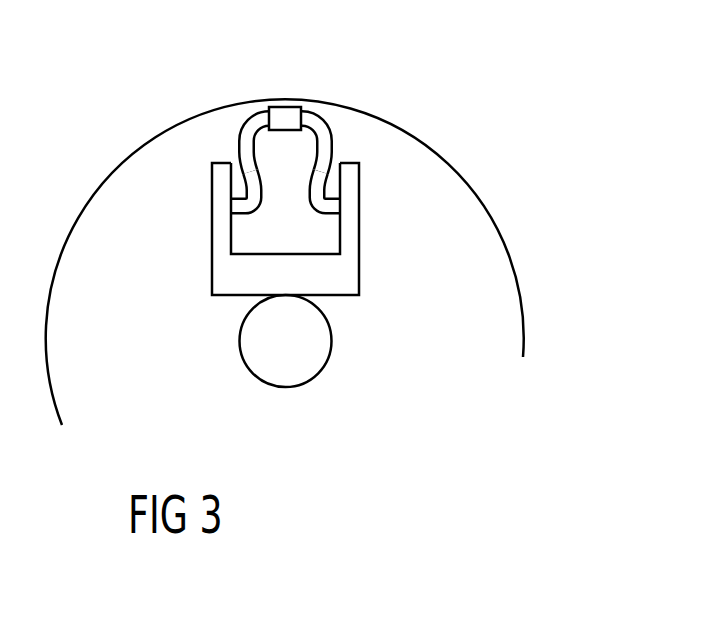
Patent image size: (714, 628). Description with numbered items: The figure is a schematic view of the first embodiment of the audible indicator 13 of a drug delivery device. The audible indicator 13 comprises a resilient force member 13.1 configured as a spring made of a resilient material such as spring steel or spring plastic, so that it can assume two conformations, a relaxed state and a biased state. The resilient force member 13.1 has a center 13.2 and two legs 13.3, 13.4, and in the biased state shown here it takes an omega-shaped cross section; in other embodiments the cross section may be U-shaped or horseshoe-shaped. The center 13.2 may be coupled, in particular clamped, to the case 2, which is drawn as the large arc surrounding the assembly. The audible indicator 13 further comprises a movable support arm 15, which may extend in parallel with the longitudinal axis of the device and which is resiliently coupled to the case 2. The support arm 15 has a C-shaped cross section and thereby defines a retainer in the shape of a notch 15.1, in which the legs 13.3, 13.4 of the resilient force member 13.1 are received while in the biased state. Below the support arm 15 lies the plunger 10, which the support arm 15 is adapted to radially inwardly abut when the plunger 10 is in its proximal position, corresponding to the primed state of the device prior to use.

The case 2 is at (522, 292).
The plunger 10 is at (238, 340).
The audible indicator 13 is at (284, 116).
The resilient force member 13.1 is at (245, 123).
The center 13.2 is at (285, 108).
The leg 13.3 is at (245, 190).
The leg 13.4 is at (320, 178).
The support arm 15 is at (280, 241).
The notch 15.1 is at (323, 236).